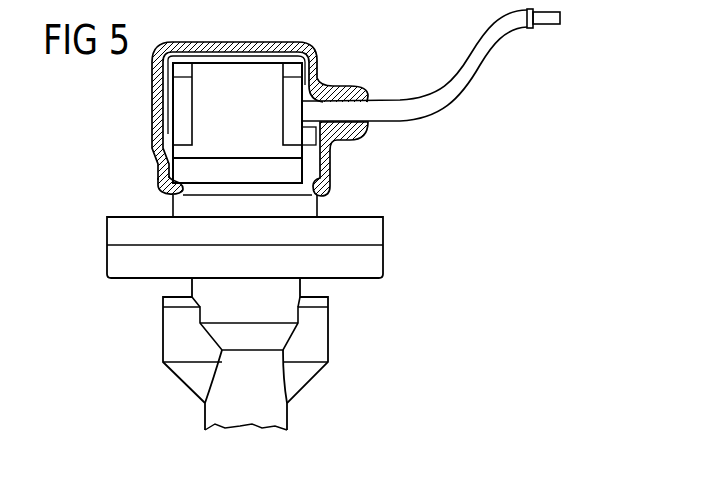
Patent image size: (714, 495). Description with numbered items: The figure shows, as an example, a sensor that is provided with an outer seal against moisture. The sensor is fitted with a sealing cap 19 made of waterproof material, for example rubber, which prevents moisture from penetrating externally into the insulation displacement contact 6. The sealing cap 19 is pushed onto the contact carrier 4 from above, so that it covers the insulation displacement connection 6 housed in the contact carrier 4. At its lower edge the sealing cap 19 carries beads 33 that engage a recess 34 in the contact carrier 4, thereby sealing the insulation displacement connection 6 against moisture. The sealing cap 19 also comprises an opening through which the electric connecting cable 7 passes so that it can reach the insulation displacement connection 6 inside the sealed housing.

The contact carrier 4 is at (240, 168).
The insulation displacement contact 6 is at (253, 108).
The electric connecting cable 7 is at (546, 18).
The sealing cap 19 is at (157, 100).
The beads 33 is at (330, 192).
The recess 34 is at (174, 194).